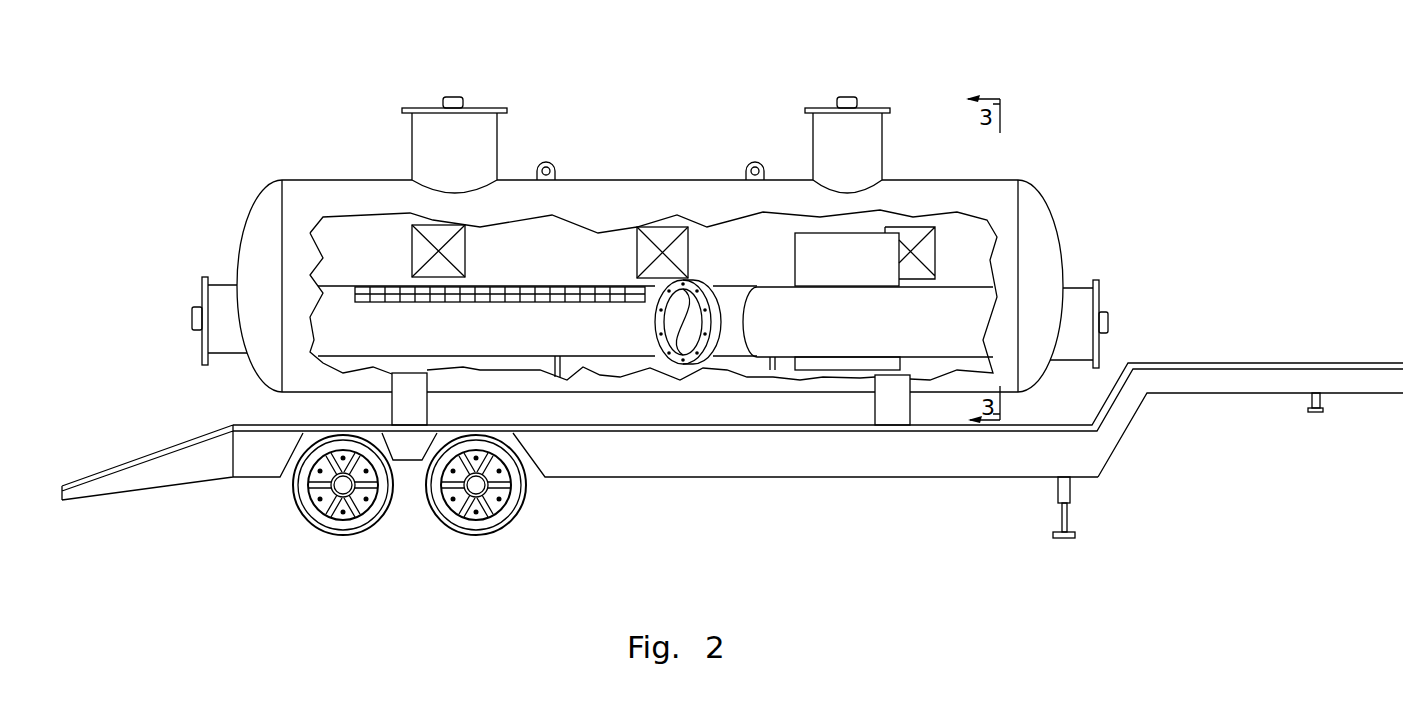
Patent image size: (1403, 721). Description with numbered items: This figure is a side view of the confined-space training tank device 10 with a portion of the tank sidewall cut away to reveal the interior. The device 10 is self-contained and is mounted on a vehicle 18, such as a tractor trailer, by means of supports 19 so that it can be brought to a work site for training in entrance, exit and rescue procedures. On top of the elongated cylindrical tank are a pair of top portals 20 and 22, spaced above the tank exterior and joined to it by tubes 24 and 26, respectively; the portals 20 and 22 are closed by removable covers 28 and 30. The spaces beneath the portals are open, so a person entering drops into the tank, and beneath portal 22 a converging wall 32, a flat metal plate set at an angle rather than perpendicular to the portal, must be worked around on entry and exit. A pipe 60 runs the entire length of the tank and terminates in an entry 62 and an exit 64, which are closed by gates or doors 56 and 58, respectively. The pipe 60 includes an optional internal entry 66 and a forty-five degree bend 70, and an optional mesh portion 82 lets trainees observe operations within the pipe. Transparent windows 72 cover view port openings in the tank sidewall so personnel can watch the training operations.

The training tank device 10 is at (1200, 144).
The vehicle 18 is at (1078, 455).
The supports 19 is at (887, 410).
The top portal 20 is at (490, 108).
The top portal 22 is at (877, 108).
The tube 24 is at (497, 143).
The tube 26 is at (882, 142).
The removable cover 28 is at (460, 97).
The removable cover 30 is at (847, 97).
The converging wall 32 is at (833, 255).
The gate or door 56 is at (206, 297).
The gate or door 58 is at (1100, 295).
The pipe 60 is at (583, 337).
The entry 62 is at (222, 280).
The exit 64 is at (1080, 288).
The internal entry 66 is at (700, 283).
The 45° bend 70 is at (747, 288).
The transparent windows 72 is at (937, 233).
The mesh portion 82 is at (565, 286).